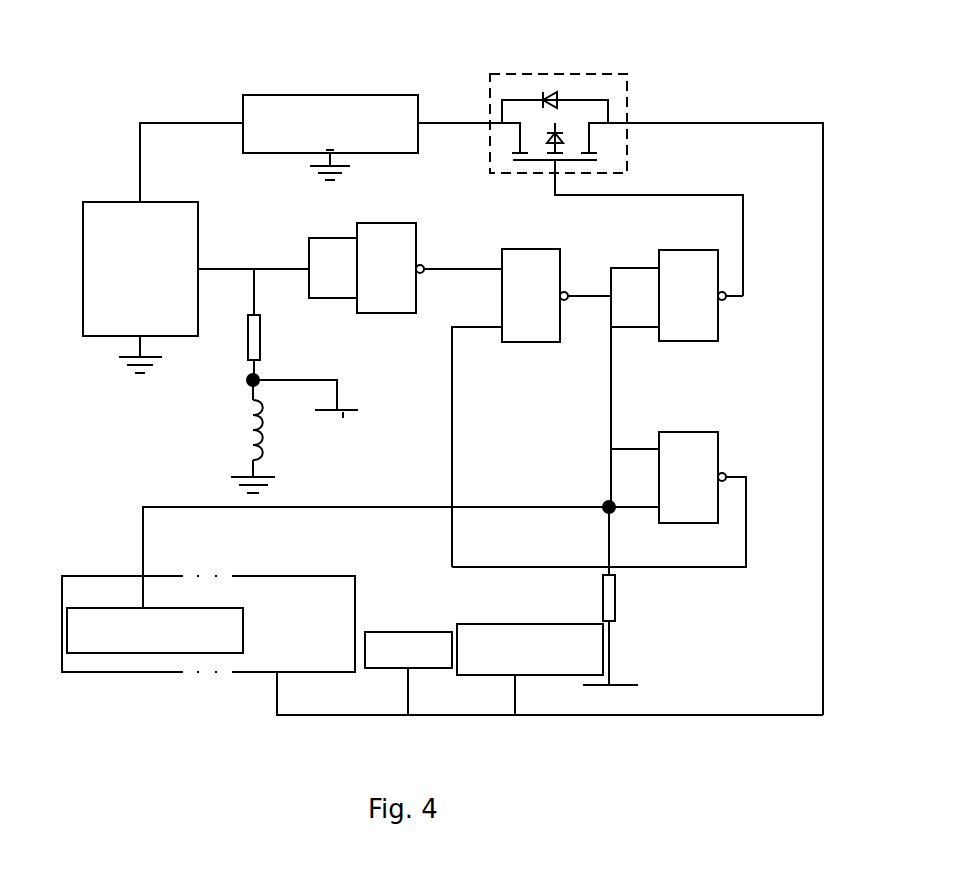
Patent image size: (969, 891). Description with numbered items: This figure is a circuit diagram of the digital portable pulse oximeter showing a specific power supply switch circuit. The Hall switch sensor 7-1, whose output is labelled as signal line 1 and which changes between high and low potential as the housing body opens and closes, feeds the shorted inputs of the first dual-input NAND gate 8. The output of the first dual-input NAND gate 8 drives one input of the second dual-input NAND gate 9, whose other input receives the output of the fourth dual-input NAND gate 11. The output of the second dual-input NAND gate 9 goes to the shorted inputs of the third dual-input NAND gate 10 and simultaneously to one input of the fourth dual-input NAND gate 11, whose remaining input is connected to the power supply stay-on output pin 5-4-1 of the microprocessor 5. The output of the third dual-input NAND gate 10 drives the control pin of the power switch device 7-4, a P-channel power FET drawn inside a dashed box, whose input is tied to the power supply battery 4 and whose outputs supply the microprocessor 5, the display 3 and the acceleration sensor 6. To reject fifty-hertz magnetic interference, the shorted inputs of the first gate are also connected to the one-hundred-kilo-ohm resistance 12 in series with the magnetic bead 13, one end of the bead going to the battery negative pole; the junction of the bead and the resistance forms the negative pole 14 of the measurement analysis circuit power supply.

The housing body 1 is at (232, 268).
The display 3 is at (398, 670).
The power supply battery 4 is at (347, 95).
The measurement analysis circuit 5 is at (250, 662).
The power supply stay-on output pin 5-4-1 is at (143, 528).
The acceleration sensor 6 is at (550, 676).
The Hall switch sensor 7-1 is at (108, 200).
The power switch device 7-4 is at (618, 88).
The first dual-input NAND gate 8 is at (407, 243).
The second dual-input NAND gate 9 is at (552, 265).
The third dual-input NAND gate 10 is at (705, 322).
The fourth dual-input NAND gate 11 is at (705, 458).
The resistance 12 is at (258, 338).
The magnetic bead 13 is at (253, 430).
The negative pole 14 is at (343, 418).